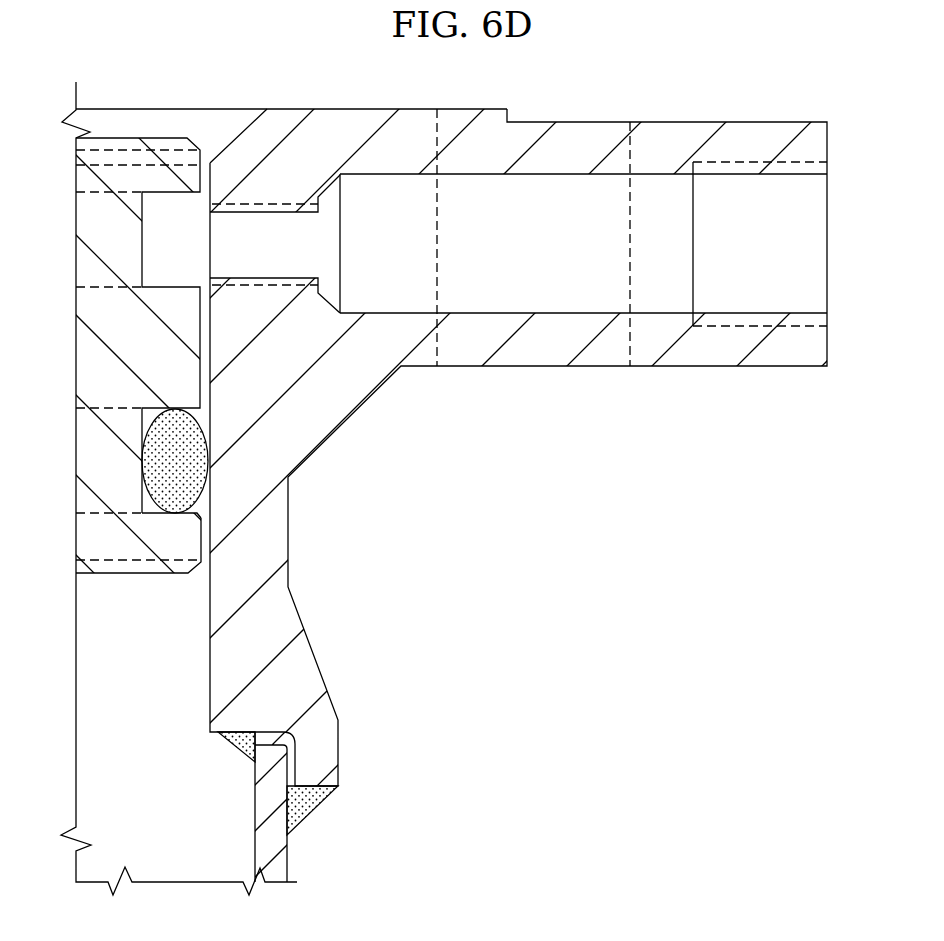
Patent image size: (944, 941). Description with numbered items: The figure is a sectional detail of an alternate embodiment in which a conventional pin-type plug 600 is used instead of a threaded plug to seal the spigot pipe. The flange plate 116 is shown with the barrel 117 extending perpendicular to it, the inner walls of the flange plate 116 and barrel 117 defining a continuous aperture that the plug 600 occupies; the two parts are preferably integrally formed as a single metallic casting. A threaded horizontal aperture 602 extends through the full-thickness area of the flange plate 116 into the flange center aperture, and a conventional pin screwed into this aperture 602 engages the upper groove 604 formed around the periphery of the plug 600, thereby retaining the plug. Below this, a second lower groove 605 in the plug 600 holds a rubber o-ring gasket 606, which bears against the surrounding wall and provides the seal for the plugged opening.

The pin-type plug 600 is at (162, 137).
The horizontal apertures 602 is at (668, 174).
The upper groove 604 is at (199, 204).
The second lower groove 605 is at (205, 505).
The rubber o-ring gasket 606 is at (207, 422).
The flange plate 116 is at (770, 122).
The barrel 117 is at (288, 541).